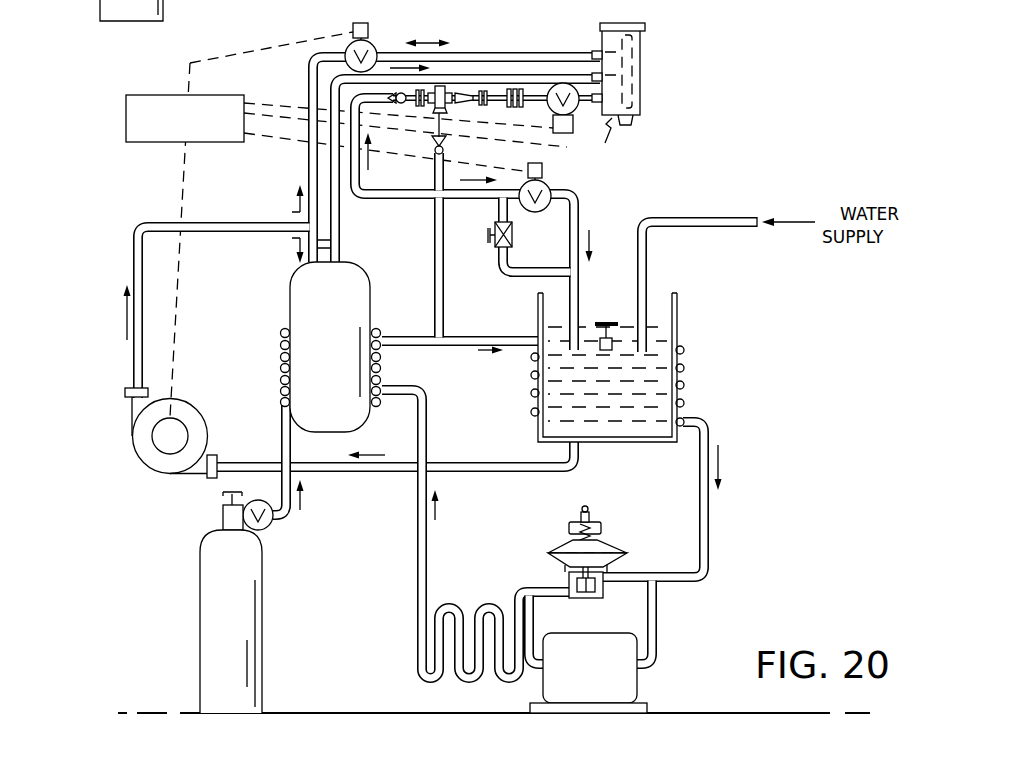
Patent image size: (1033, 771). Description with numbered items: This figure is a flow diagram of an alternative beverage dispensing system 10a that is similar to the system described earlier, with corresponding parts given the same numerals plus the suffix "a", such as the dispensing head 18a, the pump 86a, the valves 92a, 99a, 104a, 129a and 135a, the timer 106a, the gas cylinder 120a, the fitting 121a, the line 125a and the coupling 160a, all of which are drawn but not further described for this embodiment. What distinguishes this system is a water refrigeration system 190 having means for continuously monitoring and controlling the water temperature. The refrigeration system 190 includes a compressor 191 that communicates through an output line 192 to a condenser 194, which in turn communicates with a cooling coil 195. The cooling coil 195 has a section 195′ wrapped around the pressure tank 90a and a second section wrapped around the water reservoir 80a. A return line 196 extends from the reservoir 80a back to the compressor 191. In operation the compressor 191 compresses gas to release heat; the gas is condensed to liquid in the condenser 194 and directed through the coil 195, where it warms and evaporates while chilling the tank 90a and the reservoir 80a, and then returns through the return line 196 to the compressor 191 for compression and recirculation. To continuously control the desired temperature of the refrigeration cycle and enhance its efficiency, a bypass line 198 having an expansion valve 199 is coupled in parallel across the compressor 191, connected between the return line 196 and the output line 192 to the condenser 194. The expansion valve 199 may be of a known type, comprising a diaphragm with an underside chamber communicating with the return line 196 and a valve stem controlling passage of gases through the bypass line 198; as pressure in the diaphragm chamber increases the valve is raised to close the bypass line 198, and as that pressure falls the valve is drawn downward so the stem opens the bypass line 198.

The beverage dispensing system 10a is at (133, 230).
The dispensing head 18a is at (650, 50).
The water reservoir 80a is at (677, 310).
The pump 86a is at (143, 455).
The pressure tank 90a is at (300, 287).
The solenoid valve 92a is at (537, 213).
The manual valve 99a is at (500, 245).
The solenoid valve 104a is at (368, 43).
The timer 106a is at (158, 143).
The carbon dioxide cylinder 120a is at (205, 636).
The cross fitting 121a is at (457, 87).
The carbon dioxide supply line 125a is at (282, 435).
The solenoid valve 129a is at (575, 118).
The pressure regulating valve 135a is at (268, 528).
The coupling 160a is at (518, 89).
The water refrigeration system 190 is at (675, 628).
The compressor 191 is at (606, 685).
The output line 192 is at (526, 626).
The condenser 194 is at (440, 637).
The cooling coil 195 is at (428, 425).
The cooling coil section 195′ is at (385, 372).
The return line 196 is at (708, 506).
The bypass line 198 is at (635, 576).
The expansion valve 199 is at (552, 546).